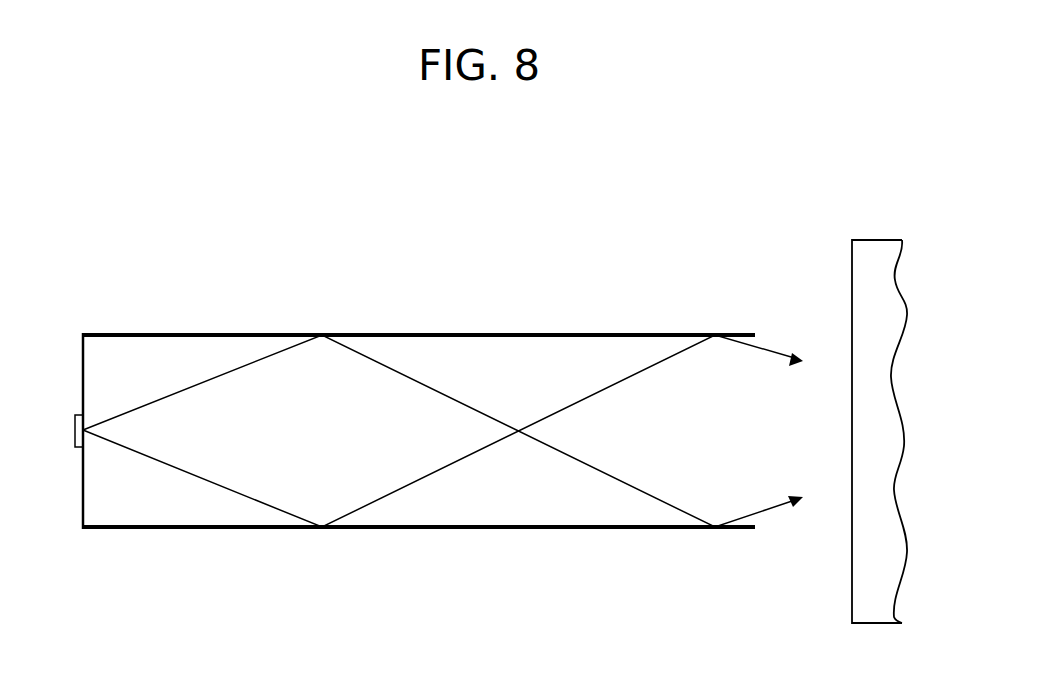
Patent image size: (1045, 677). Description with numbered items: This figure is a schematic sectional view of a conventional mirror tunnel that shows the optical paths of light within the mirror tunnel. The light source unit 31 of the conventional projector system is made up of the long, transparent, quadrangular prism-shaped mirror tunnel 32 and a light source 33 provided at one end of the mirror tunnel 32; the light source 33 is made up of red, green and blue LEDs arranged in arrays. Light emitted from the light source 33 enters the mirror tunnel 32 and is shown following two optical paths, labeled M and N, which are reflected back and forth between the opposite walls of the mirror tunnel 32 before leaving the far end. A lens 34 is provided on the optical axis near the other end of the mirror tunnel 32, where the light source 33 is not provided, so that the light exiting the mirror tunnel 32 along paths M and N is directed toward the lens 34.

The light source unit 31 is at (665, 236).
The mirror tunnel 32 is at (571, 332).
The light source 33 is at (77, 447).
The lens 34 is at (883, 238).
The light ray M is at (230, 372).
The light ray N is at (270, 501).